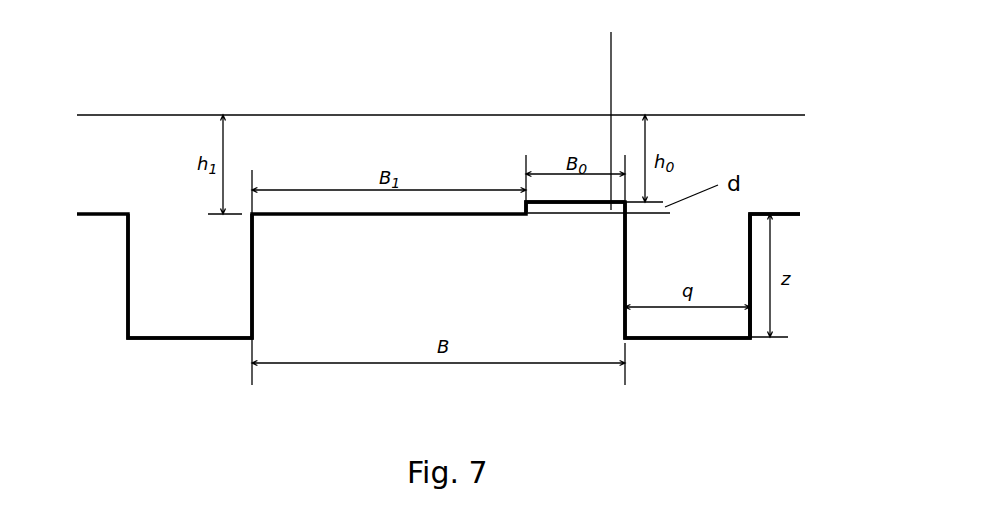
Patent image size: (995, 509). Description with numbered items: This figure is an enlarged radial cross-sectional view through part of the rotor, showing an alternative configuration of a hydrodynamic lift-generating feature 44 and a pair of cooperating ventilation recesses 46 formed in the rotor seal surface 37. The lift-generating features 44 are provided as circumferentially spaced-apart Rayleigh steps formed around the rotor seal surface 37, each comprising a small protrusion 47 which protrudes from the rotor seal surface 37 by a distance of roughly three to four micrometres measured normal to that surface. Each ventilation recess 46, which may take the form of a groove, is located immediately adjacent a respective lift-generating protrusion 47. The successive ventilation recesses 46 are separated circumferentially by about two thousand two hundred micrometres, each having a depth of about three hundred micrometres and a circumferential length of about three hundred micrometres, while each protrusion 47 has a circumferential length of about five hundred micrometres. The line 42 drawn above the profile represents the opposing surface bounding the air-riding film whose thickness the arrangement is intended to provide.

The reference line / outer surface 42 is at (707, 115).
The lift-generating feature 44 is at (502, 160).
The protrusion 47 is at (612, 109).
The rotor seal surface 37 is at (787, 212).
The ventilation recess 46 is at (143, 294).